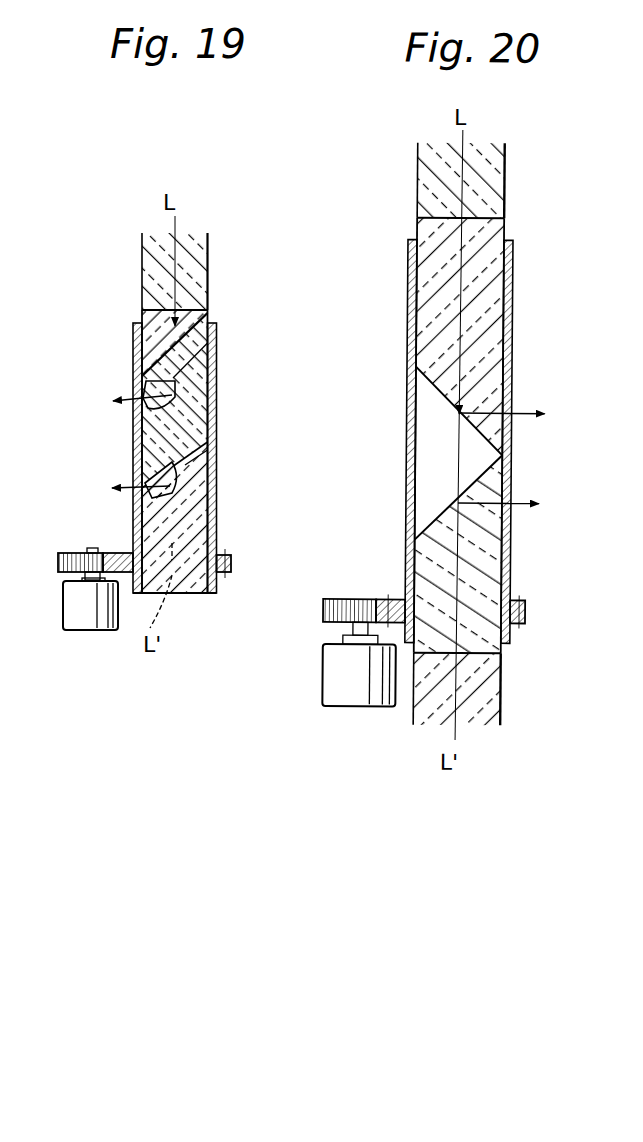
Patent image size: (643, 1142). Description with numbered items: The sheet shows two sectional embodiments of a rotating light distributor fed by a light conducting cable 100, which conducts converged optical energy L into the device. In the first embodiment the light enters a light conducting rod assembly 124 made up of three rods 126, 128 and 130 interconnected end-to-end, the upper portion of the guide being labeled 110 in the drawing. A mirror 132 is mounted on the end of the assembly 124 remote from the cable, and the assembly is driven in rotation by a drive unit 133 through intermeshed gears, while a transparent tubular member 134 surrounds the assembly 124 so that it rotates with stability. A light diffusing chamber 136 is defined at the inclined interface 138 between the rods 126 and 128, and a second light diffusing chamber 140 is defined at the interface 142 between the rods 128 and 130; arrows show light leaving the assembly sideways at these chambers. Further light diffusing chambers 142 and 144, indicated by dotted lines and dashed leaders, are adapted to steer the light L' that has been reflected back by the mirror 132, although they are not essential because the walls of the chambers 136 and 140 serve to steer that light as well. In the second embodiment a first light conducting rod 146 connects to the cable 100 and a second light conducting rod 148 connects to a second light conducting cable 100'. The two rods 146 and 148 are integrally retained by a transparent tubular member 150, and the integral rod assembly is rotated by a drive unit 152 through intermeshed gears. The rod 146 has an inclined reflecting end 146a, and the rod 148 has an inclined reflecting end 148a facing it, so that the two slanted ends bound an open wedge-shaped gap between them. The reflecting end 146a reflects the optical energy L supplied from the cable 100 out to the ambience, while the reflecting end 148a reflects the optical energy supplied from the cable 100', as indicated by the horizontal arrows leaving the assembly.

In FIG. 19, the light guide 110 is at (207, 246).
In FIG. 19, the light conducting rod assembly 124 is at (207, 314).
In FIG. 19, the rod 126 is at (207, 336).
In FIG. 19, the rod 128 is at (205, 410).
In FIG. 19, the rod 130 is at (197, 510).
In FIG. 19, the mirror 132 is at (183, 596).
In FIG. 19, the drive unit 133 is at (66, 612).
In FIG. 19, the transparent tubular member 134 is at (133, 448).
In FIG. 19, the light diffusing chamber 136 is at (133, 415).
In FIG. 19, the interface 138 is at (177, 382).
In FIG. 19, the light diffusing chamber 140 is at (140, 505).
In FIG. 19, the interface / light diffusing chamber 142 is at (205, 352).
In FIG. 19, the light diffusing chamber 144 is at (205, 437).
In FIG. 20, the light conducting cable 100 is at (495, 181).
In FIG. 20, the second light conducting cable 100' is at (489, 689).
In FIG. 20, the first light conducting rod 146 is at (495, 326).
In FIG. 20, the inclined reflecting end 146a is at (459, 412).
In FIG. 20, the second light conducting rod 148 is at (495, 550).
In FIG. 20, the inclined reflecting end 148a is at (453, 511).
In FIG. 20, the transparent tubular member 150 is at (513, 276).
In FIG. 20, the drive unit 152 is at (325, 681).